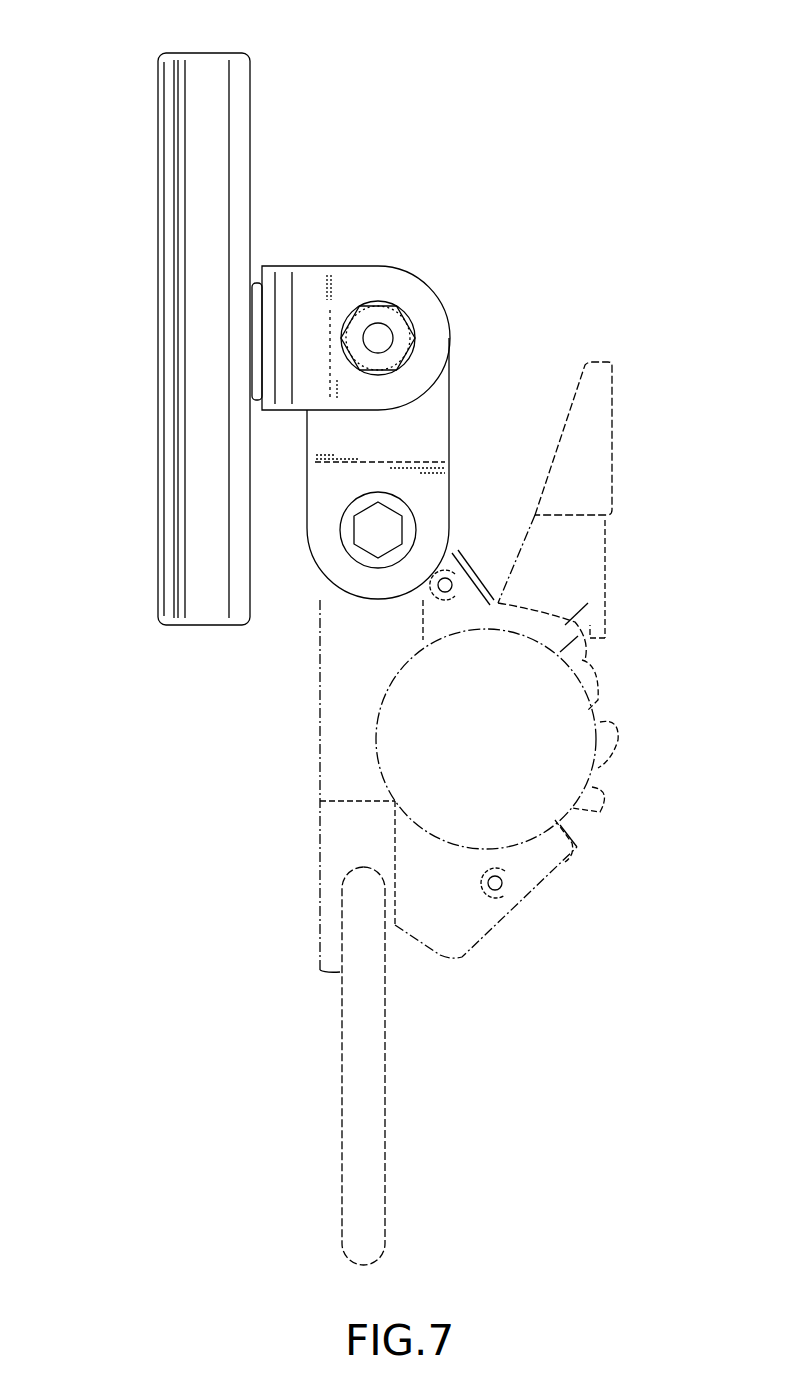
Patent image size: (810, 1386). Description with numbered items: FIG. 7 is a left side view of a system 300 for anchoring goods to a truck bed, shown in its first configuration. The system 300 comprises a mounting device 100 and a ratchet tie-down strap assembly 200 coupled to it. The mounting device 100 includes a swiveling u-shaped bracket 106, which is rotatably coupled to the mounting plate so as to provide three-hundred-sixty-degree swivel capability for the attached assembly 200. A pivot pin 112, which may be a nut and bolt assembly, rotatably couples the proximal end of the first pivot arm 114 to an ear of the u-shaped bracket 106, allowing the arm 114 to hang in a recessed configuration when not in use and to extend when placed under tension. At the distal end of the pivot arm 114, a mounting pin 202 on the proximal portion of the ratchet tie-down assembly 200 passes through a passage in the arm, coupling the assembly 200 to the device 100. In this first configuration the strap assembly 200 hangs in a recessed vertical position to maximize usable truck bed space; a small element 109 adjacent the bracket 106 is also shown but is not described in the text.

The mounting device 100 is at (110, 96).
The screen mounting tab 109 is at (256, 285).
The swiveling u-shaped bracket 106 is at (307, 282).
The pivot pin 112 is at (380, 328).
The first pivot arm 114 is at (436, 408).
The mounting pin 202 is at (378, 530).
The system for anchoring goods 300 is at (610, 194).
The ratchet tie-down strap assembly 200 is at (652, 450).